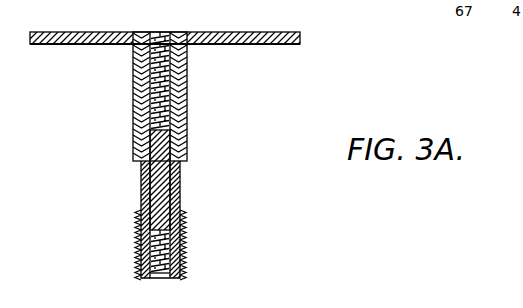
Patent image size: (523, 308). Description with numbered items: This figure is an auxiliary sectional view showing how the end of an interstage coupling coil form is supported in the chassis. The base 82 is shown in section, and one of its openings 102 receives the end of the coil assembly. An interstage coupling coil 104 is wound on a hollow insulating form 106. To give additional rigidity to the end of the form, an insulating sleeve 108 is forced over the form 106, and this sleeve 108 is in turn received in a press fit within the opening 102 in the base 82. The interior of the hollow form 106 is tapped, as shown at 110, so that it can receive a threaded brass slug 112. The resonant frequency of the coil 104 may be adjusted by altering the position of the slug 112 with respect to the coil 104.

The base 82 is at (232, 32).
The opening 102 is at (134, 32).
The interstage coupling coil 104 is at (187, 226).
The insulating form 106 is at (181, 183).
The insulating sleeve 108 is at (190, 115).
The tapped portion 110 is at (158, 32).
The threaded brass slug 112 is at (143, 177).